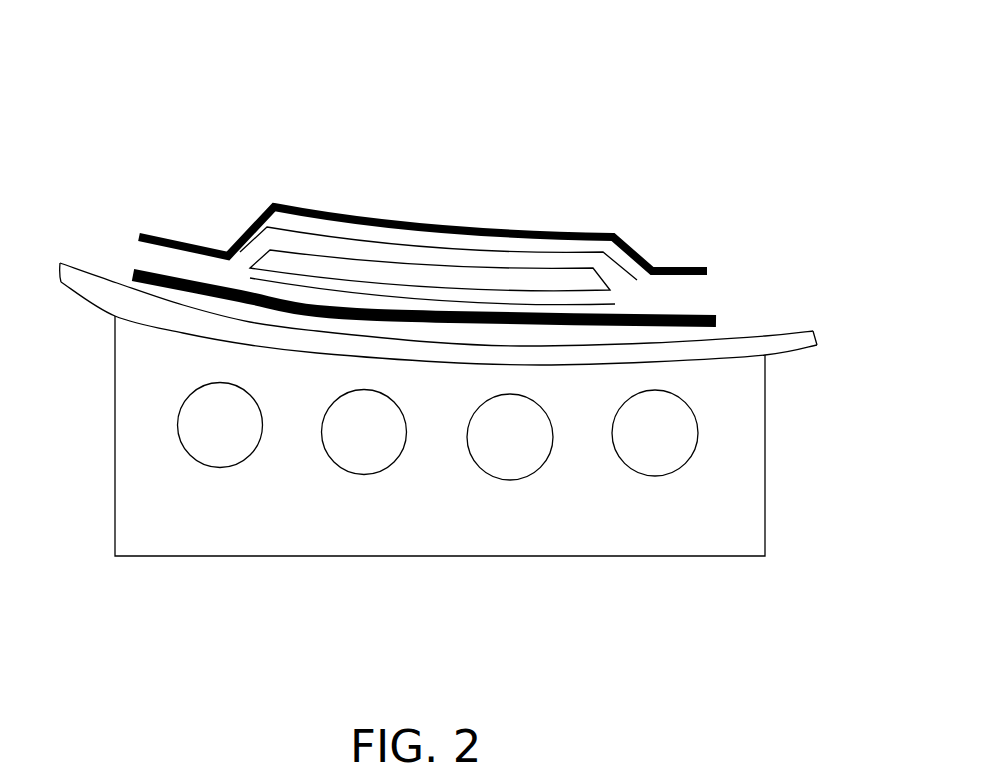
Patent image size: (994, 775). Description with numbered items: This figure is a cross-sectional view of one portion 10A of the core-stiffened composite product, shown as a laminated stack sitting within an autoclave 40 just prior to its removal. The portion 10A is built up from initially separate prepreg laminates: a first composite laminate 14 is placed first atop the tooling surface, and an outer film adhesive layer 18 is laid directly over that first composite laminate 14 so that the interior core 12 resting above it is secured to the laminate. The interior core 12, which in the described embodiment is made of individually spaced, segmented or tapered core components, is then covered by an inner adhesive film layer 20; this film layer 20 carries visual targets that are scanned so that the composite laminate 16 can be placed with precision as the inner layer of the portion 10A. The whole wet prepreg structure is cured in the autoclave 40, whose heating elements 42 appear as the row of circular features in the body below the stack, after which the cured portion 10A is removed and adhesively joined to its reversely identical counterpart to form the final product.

The portion of the composite product 10A is at (580, 88).
The interior core 12 is at (536, 280).
The first composite laminate 14 is at (133, 273).
The composite laminate 16 is at (633, 250).
The outer film adhesive layer 18 is at (317, 288).
The inner adhesive film layer 20 is at (403, 242).
The autoclave 40 is at (143, 505).
The heating elements 42 is at (655, 432).